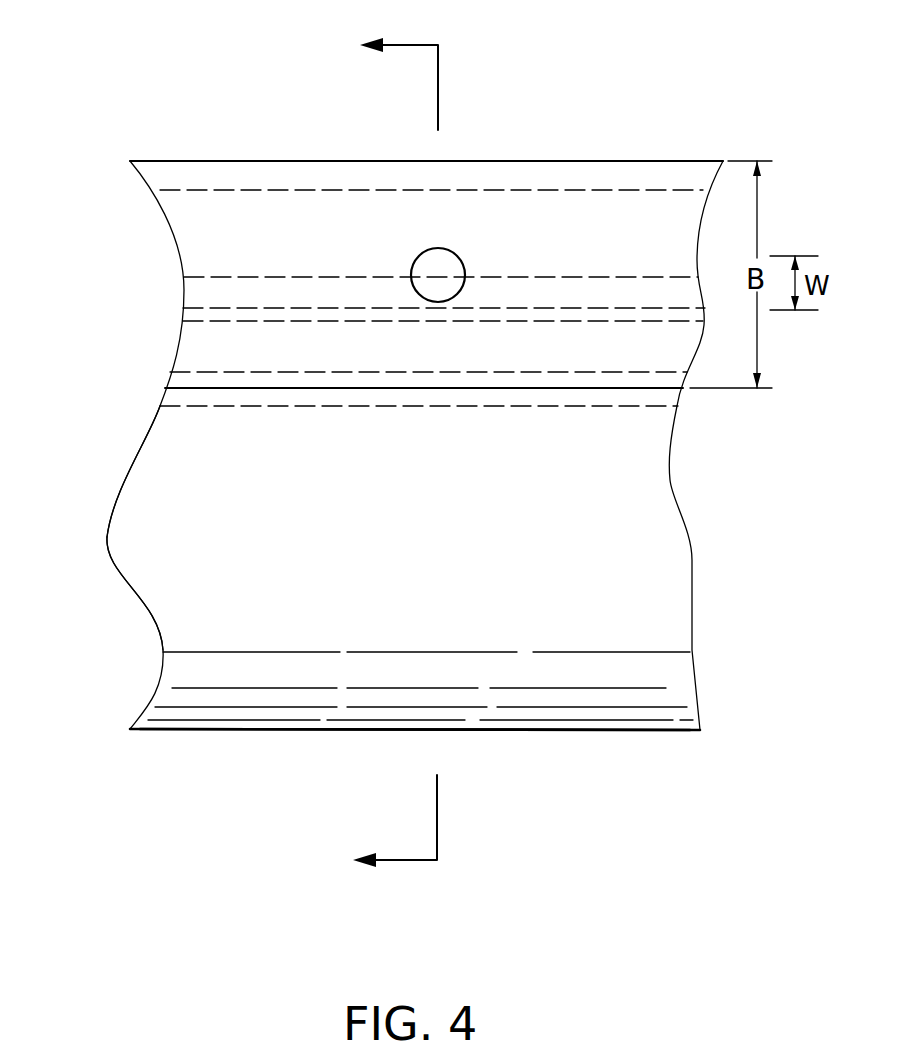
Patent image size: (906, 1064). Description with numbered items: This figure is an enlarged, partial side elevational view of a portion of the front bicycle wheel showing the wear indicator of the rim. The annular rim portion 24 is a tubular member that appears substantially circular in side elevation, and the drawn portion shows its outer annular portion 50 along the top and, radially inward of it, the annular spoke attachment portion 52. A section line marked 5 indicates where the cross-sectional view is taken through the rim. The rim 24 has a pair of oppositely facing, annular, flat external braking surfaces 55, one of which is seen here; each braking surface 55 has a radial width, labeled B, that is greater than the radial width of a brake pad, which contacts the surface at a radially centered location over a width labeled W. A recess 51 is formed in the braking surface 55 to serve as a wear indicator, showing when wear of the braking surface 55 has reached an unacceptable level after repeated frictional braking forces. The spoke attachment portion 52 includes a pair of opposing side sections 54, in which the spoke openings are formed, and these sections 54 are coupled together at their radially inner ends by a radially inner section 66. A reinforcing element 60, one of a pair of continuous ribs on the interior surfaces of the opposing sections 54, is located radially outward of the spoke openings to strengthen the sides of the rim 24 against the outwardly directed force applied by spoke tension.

The annular rim portion 24 is at (641, 122).
The outer annular portion 50 is at (360, 161).
The recess 51 is at (478, 258).
The annular spoke attachment portion 52 is at (133, 463).
The opposing side section 54 is at (168, 555).
The braking surface 55 is at (369, 239).
The reinforcing element 60 is at (623, 407).
The radially inner section 66 is at (290, 730).
The section line 5 is at (395, 456).